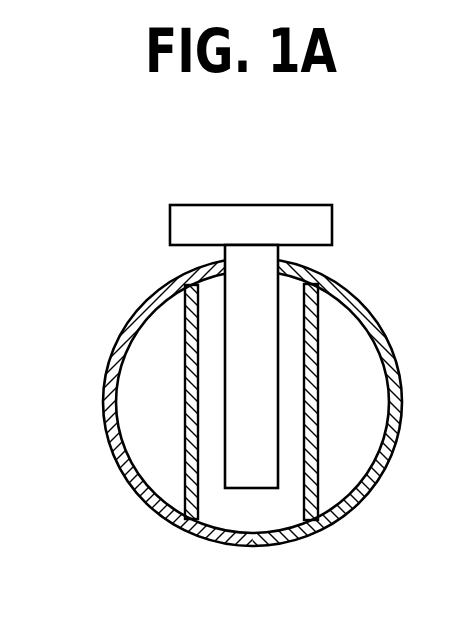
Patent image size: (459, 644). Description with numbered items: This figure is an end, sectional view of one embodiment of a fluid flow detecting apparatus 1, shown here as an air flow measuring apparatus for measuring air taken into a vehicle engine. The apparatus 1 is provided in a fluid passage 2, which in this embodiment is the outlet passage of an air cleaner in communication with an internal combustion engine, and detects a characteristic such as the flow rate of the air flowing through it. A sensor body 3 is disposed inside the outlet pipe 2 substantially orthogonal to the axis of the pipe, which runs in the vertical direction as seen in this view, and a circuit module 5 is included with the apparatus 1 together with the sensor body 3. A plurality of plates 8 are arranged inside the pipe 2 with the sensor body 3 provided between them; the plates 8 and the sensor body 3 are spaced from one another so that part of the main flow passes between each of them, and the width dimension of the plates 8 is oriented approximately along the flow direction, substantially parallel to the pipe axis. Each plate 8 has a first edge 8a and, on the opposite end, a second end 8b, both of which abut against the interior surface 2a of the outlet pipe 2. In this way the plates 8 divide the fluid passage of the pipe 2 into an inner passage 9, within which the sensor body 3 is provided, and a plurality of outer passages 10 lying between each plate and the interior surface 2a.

The fluid flow detecting apparatus 1 is at (321, 203).
The fluid passage 2 is at (143, 311).
The interior surface 2a is at (120, 366).
The sensor body 3 is at (243, 457).
The circuit module 5 is at (201, 216).
The plates 8 is at (304, 504).
The first edge 8a is at (193, 288).
The second end 8b is at (190, 524).
The inner passage 9 is at (265, 526).
The outer passages 10 is at (169, 416).